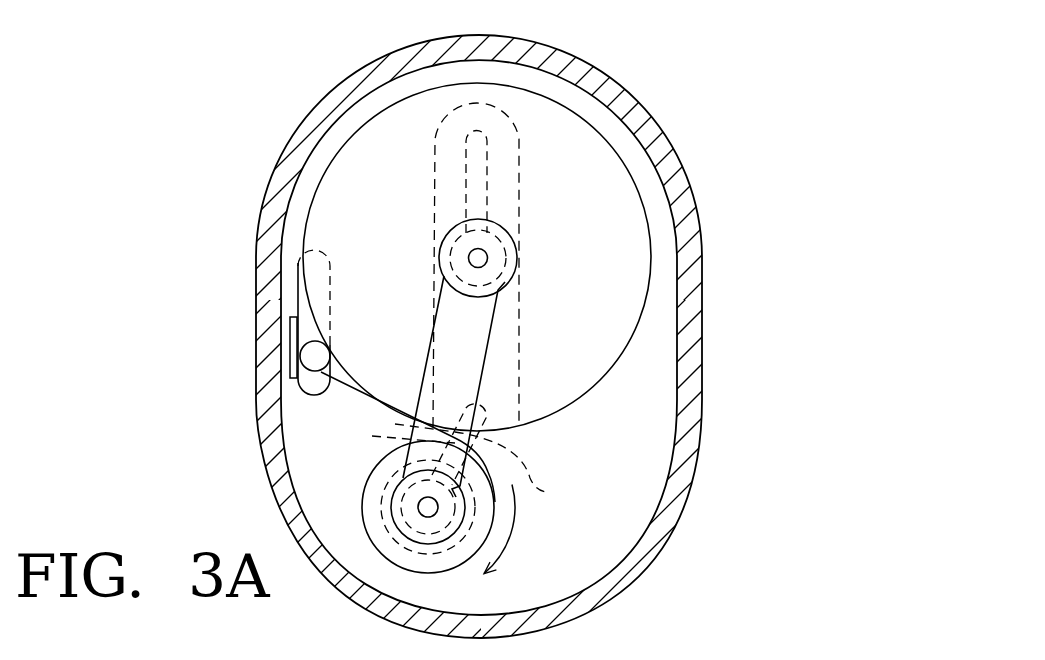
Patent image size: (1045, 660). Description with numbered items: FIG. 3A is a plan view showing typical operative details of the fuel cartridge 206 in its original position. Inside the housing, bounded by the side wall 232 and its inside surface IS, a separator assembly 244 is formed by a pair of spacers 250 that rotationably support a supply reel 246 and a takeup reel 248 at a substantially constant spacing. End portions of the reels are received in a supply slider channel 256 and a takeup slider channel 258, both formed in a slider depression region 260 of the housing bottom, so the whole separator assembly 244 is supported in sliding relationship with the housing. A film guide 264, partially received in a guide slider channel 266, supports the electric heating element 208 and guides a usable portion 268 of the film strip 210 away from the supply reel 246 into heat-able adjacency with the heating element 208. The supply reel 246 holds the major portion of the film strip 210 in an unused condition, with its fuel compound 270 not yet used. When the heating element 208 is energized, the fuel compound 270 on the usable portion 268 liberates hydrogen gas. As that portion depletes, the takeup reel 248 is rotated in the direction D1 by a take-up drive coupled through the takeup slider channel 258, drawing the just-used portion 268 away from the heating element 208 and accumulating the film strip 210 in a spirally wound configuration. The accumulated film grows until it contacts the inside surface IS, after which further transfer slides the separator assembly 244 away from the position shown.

The fuel cartridge 206 is at (695, 66).
The electric heating element 208 is at (290, 337).
The film strip 210 is at (642, 223).
The side wall 232 is at (697, 318).
The inside surface IS is at (679, 405).
The separator assembly 244 is at (530, 454).
The supply reel 246 is at (438, 235).
The takeup reel 248 is at (392, 483).
The spacers 250 is at (480, 340).
The supply slider channel 256 is at (489, 164).
The takeup slider channel 258 is at (532, 485).
The slider depression region 260 is at (504, 192).
The film guide 264 is at (322, 357).
The guide slider channel 266 is at (333, 276).
The usable portion 268 is at (292, 397).
The fuel compound 270 is at (323, 178).
The direction D1 is at (513, 528).